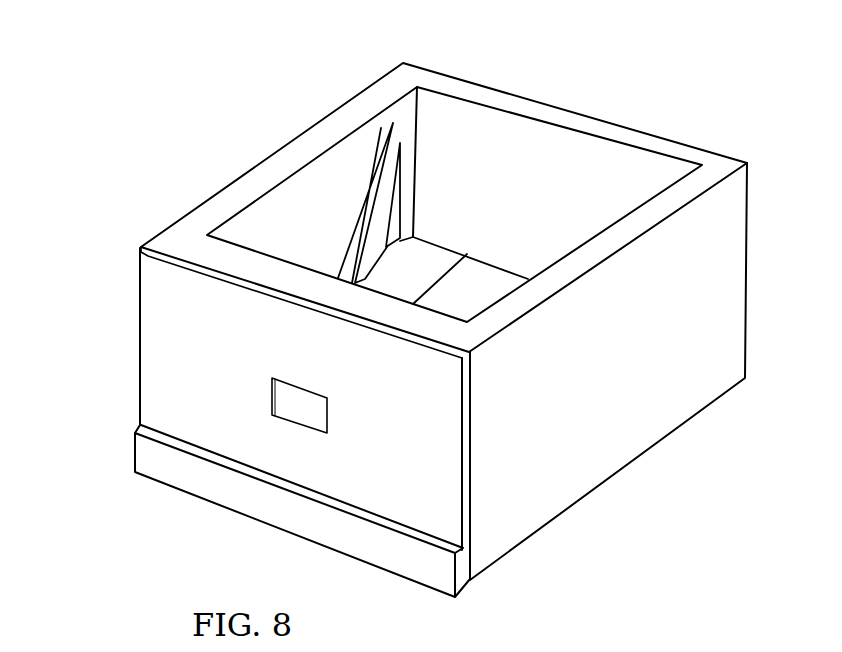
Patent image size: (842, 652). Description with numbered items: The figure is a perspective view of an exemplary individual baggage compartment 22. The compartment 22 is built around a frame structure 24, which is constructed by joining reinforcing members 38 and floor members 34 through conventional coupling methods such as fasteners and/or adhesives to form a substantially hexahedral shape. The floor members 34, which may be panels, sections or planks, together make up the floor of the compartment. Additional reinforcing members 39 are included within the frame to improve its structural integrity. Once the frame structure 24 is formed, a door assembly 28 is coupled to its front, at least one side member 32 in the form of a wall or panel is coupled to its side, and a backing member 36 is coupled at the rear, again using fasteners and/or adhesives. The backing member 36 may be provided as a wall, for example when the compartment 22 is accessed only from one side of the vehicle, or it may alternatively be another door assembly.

The compartment 22 is at (195, 148).
The frame structure 24 is at (152, 222).
The door assembly 28 is at (198, 397).
The side member 32 is at (653, 393).
The floor member 34 is at (467, 293).
The backing member 36 is at (588, 150).
The reinforcing member 38 is at (375, 97).
The reinforcing member 39 is at (362, 207).